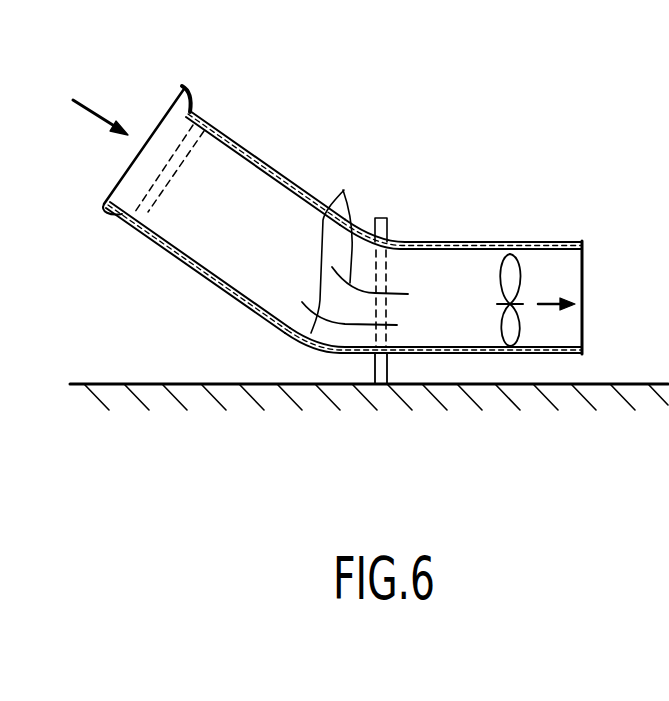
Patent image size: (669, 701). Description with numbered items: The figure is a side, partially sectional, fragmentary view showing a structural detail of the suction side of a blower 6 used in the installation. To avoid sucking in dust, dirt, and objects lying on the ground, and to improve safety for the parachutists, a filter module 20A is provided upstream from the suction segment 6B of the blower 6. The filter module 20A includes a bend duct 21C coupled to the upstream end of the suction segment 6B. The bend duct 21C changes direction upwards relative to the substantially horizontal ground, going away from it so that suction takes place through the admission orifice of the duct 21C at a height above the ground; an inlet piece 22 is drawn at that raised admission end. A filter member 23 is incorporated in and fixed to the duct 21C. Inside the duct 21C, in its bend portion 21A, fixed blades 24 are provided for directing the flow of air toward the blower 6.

The filter module 20A is at (344, 150).
The bend duct 21C is at (250, 152).
The bend portion 21A is at (316, 350).
The inlet mouth piece 22 is at (160, 125).
The filter member 23 is at (152, 200).
The fixed blades 24 is at (355, 245).
The blower 6 is at (492, 246).
The suction segment 6B is at (386, 275).